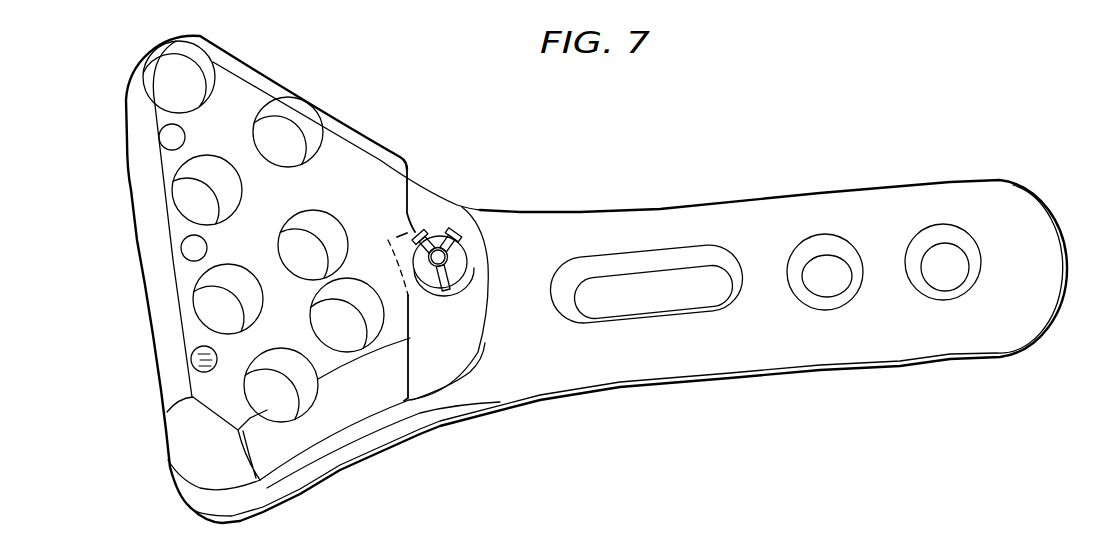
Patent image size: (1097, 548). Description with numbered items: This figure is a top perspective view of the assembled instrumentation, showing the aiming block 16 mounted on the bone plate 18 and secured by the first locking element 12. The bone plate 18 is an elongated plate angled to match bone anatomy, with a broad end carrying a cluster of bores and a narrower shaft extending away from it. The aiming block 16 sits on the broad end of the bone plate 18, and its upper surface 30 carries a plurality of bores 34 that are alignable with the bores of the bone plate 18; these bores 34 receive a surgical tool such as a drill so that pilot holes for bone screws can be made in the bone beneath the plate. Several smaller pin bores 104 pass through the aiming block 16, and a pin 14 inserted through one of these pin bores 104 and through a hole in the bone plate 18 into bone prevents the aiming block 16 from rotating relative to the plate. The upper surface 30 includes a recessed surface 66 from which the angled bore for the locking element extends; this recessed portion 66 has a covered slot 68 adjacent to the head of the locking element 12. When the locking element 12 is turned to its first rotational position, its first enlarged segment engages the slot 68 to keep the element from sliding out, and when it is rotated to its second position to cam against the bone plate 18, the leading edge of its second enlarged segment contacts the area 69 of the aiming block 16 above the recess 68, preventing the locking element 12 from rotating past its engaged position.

The first locking element 12 is at (456, 232).
The pin 14 is at (196, 389).
The aiming block 16 is at (203, 443).
The bone plate 18 is at (764, 238).
The upper surface 30 is at (437, 207).
The bores 34 is at (168, 80).
The recessed surface 66 is at (368, 168).
The covered slot 68 is at (388, 240).
The area 69 is at (437, 300).
The pin bores 104 is at (187, 246).